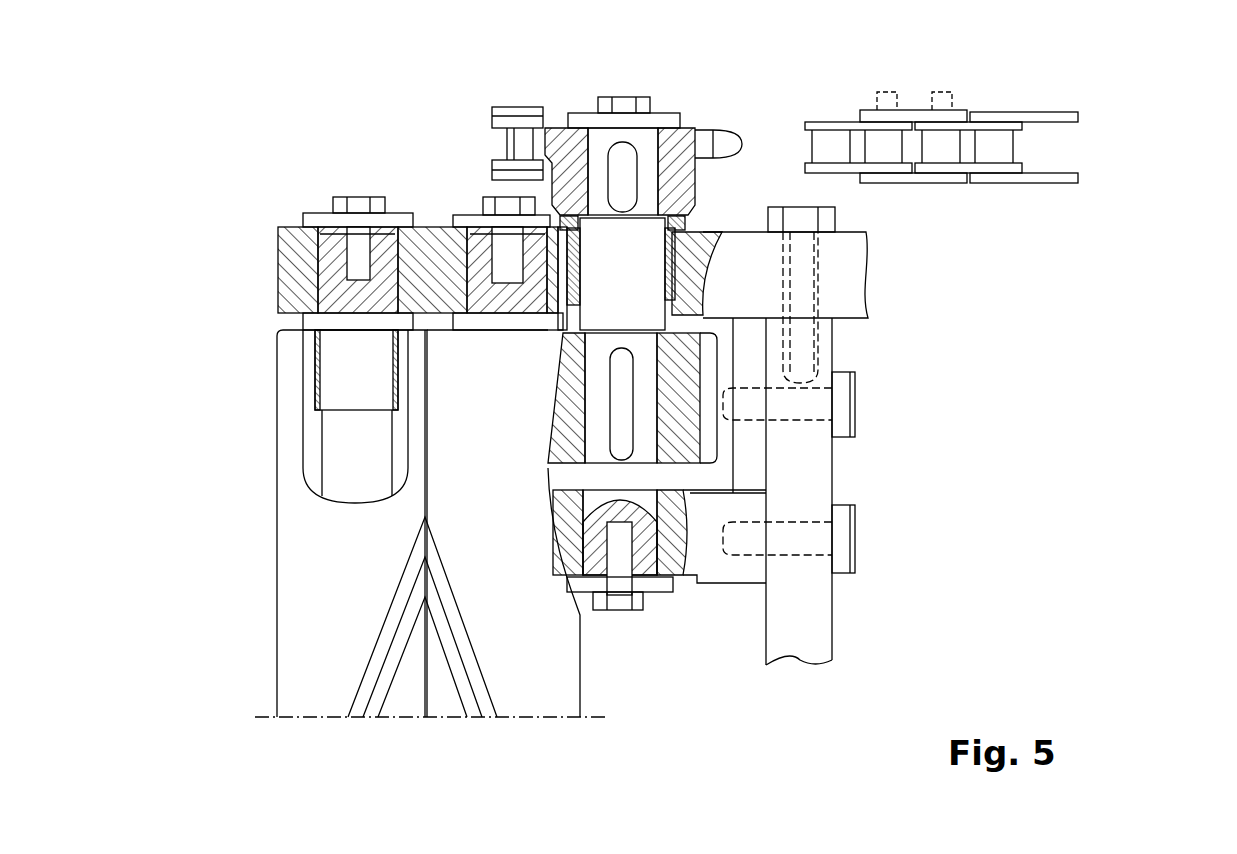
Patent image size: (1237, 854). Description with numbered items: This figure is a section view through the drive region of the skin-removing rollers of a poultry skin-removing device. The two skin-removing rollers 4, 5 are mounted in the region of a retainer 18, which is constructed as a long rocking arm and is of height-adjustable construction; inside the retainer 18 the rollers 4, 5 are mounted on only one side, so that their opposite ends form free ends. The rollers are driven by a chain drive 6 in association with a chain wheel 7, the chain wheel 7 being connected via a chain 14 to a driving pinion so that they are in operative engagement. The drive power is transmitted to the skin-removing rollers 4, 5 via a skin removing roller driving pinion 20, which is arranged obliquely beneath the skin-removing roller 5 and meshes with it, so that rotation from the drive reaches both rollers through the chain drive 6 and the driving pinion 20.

The skin-removing roller 4 is at (293, 650).
The skin-removing roller 5 is at (563, 673).
The chain drive 6 is at (1114, 153).
The chain wheel 7 is at (693, 138).
The chain 14 is at (960, 120).
The retainer 18 is at (287, 248).
The skin removing roller driving pinion 20 is at (685, 435).